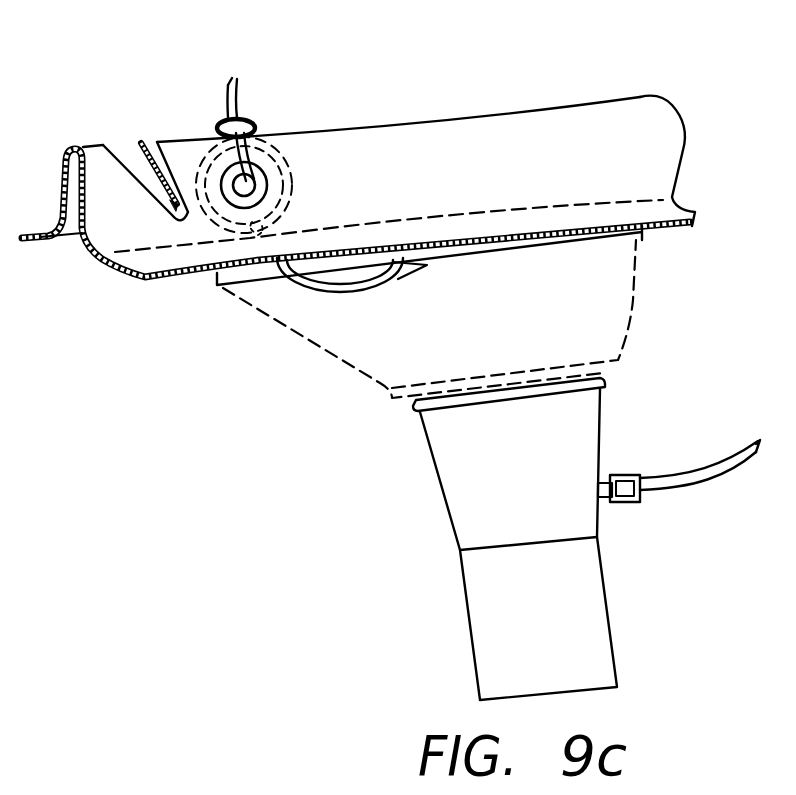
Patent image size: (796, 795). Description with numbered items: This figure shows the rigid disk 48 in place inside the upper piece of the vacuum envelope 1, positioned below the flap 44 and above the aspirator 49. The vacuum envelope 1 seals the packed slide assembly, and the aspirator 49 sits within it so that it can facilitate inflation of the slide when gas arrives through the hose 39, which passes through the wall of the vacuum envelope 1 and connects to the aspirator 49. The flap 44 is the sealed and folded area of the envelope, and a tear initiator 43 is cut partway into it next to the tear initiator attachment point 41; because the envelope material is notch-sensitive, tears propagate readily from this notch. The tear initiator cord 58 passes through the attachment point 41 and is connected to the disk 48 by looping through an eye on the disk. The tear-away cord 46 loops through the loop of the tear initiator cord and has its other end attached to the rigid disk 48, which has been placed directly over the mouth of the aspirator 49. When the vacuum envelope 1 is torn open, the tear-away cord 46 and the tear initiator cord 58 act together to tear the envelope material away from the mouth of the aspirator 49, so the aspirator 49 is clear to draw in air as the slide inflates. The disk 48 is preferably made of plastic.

The vacuum envelope 1 is at (217, 253).
The hose 39 is at (690, 473).
The tear initiator attachment point 41 is at (252, 180).
The tear initiator 43 is at (127, 148).
The flap 44 is at (480, 133).
The tear-away cord 46 is at (343, 293).
The rigid disk 48 is at (507, 248).
The aspirator 49 is at (598, 640).
The tear initiator cord 58 is at (235, 83).